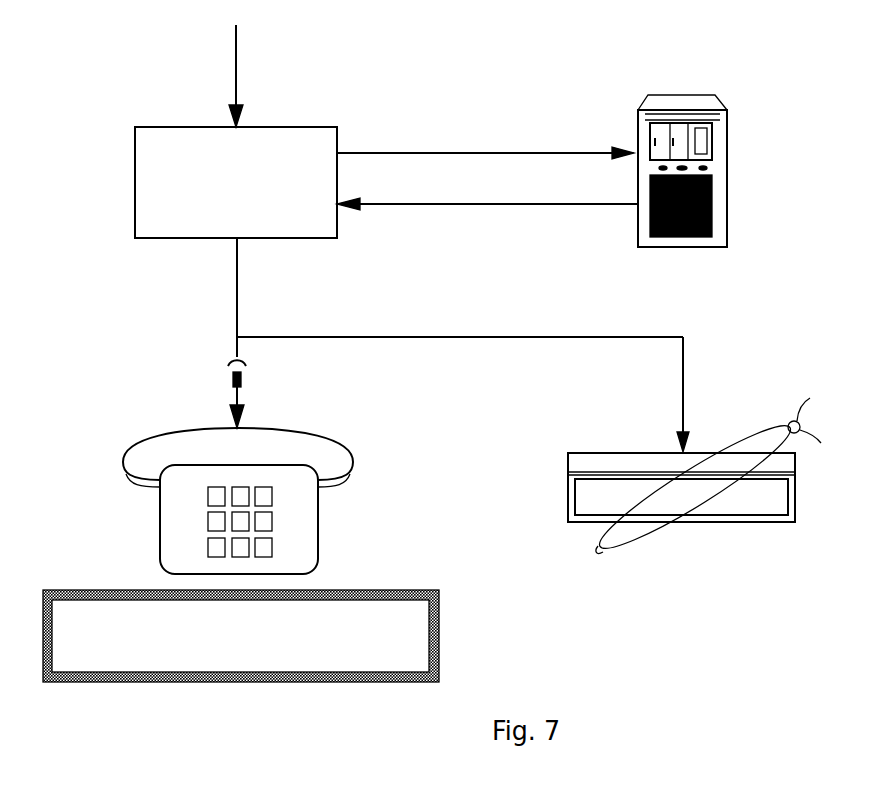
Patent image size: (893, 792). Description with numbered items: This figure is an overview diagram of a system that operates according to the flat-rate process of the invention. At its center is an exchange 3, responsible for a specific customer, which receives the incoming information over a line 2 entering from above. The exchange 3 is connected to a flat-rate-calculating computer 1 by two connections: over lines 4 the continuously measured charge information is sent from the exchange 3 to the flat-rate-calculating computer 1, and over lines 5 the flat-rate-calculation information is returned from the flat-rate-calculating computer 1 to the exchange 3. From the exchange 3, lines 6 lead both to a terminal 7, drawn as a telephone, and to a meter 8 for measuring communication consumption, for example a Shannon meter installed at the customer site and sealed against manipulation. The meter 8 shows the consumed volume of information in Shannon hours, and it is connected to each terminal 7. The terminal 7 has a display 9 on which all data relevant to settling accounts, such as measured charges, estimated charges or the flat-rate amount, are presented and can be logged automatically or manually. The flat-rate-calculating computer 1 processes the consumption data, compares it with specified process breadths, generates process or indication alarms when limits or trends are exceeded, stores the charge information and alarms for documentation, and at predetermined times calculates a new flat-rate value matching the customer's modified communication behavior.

The flat-rate-calculating computer 1 is at (722, 147).
The line 2 is at (237, 67).
The exchange 3 is at (311, 146).
The lines 4 is at (471, 153).
The lines 5 is at (467, 205).
The lines 6 is at (499, 336).
The terminal 7 is at (312, 533).
The meter 8 is at (790, 514).
The display 9 is at (417, 638).